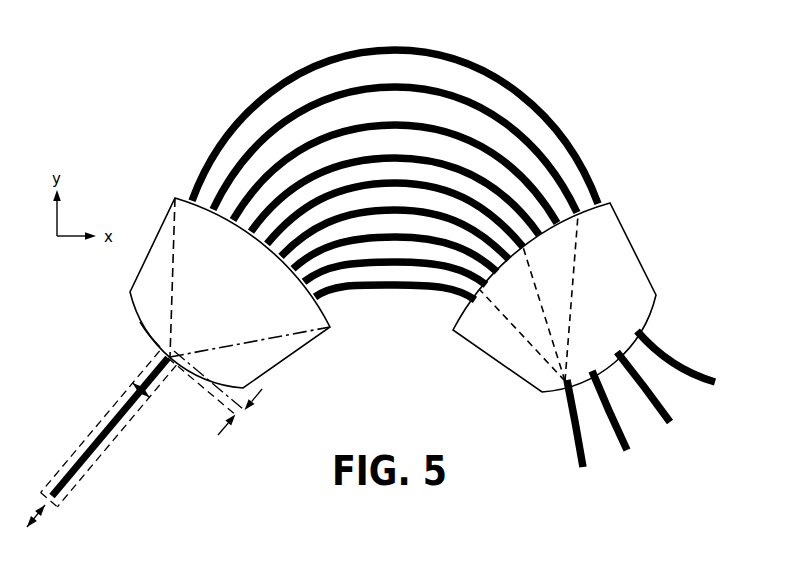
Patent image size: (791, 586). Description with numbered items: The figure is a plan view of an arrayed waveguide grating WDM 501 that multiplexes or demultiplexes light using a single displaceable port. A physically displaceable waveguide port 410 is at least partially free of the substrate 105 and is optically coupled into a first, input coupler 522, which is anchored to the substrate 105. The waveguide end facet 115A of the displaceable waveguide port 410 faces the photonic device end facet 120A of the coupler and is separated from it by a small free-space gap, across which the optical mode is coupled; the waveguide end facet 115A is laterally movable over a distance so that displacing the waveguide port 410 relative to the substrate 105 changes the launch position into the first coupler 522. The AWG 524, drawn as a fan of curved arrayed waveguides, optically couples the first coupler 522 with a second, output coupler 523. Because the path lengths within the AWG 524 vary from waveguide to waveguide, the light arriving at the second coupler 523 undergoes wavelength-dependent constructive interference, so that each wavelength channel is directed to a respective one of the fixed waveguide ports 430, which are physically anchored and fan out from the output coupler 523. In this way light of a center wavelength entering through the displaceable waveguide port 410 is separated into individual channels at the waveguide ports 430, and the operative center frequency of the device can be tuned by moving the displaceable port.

The arrayed waveguide grating WDM 501 is at (99, 67).
The AWG 524 is at (572, 126).
The first coupler 522 is at (244, 300).
The second coupler 523 is at (634, 311).
The substrate 105 is at (406, 374).
The displaceable waveguide port 410 is at (76, 452).
The waveguide end facet 115A is at (155, 349).
The photonic device end facet 120A is at (140, 327).
The waveguide ports 430 is at (676, 449).